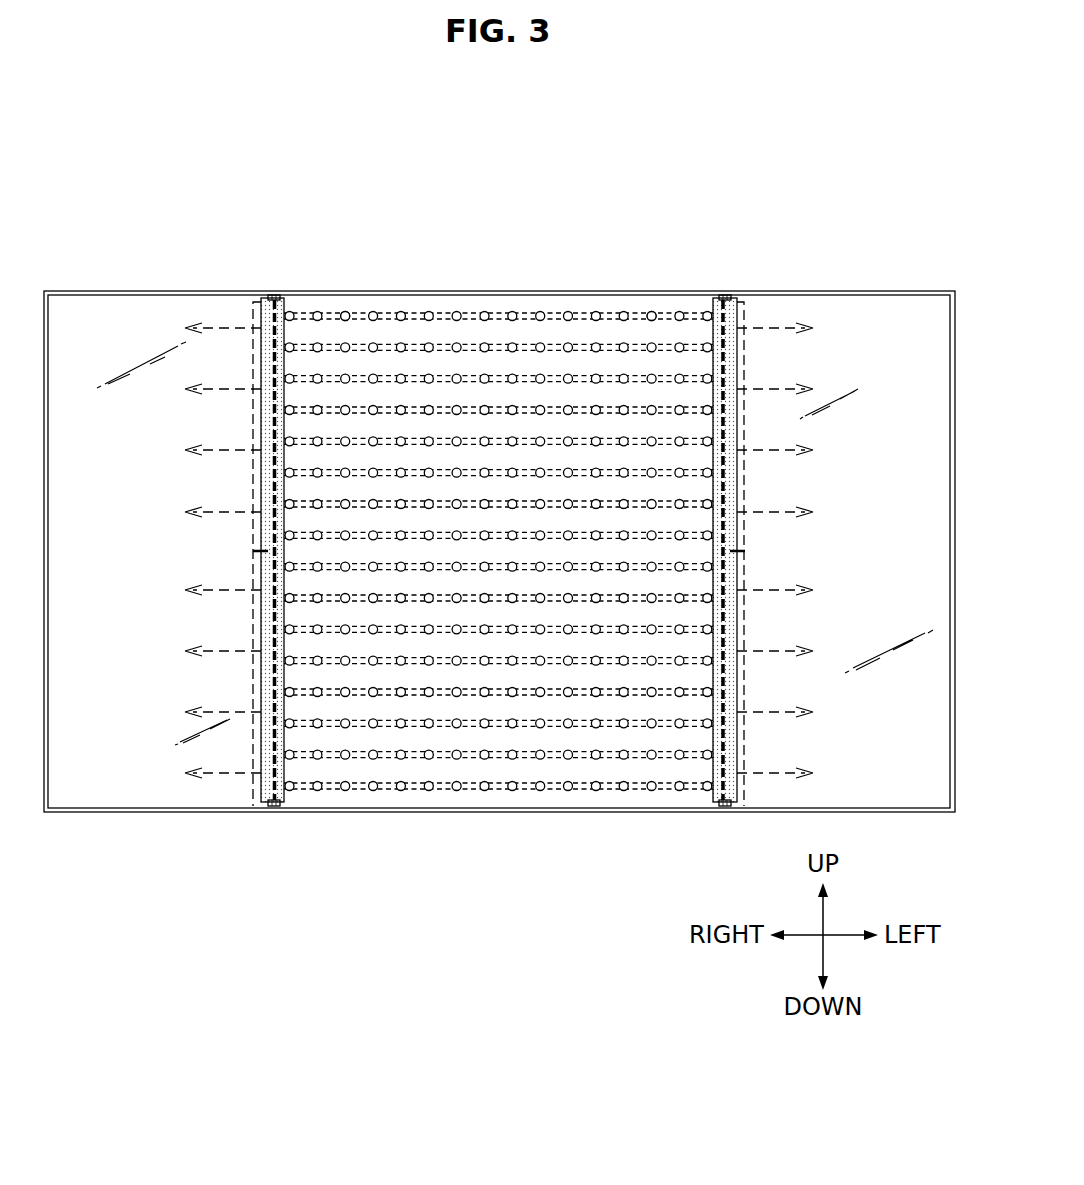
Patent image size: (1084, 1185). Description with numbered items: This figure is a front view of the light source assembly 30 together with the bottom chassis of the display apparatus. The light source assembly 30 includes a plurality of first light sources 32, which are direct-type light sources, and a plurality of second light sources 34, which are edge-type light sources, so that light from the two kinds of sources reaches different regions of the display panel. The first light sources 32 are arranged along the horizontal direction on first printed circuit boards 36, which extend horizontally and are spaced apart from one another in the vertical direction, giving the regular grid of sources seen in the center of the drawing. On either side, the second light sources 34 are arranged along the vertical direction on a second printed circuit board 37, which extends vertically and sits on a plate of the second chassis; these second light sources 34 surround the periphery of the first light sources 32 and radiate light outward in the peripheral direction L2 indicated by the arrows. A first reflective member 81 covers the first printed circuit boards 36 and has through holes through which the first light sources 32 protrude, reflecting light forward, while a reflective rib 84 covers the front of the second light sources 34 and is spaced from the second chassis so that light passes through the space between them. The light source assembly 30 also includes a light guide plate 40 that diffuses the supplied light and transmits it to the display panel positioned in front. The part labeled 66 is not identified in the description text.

The light source assembly 30 is at (278, 196).
The first light source 32 is at (345, 311).
The second light source 34 is at (265, 300).
The first printed circuit board 36 is at (413, 312).
The second printed circuit board 37 is at (243, 304).
The light guide plate 40 is at (107, 327).
The side wall 66 is at (868, 292).
The first reflective member 81 is at (562, 305).
The reflective rib 84 is at (280, 332).
The peripheral direction L2 is at (795, 306).